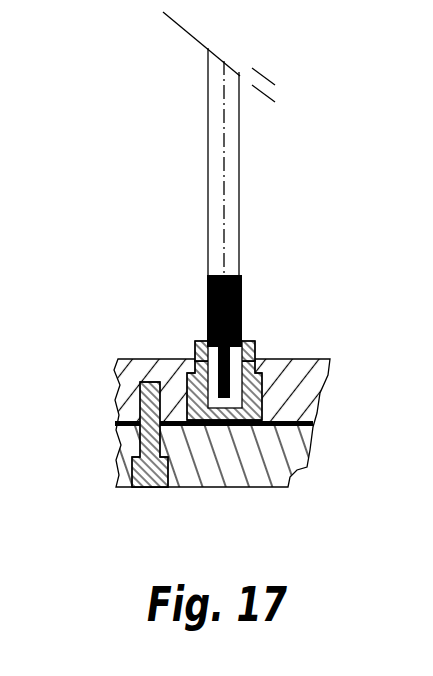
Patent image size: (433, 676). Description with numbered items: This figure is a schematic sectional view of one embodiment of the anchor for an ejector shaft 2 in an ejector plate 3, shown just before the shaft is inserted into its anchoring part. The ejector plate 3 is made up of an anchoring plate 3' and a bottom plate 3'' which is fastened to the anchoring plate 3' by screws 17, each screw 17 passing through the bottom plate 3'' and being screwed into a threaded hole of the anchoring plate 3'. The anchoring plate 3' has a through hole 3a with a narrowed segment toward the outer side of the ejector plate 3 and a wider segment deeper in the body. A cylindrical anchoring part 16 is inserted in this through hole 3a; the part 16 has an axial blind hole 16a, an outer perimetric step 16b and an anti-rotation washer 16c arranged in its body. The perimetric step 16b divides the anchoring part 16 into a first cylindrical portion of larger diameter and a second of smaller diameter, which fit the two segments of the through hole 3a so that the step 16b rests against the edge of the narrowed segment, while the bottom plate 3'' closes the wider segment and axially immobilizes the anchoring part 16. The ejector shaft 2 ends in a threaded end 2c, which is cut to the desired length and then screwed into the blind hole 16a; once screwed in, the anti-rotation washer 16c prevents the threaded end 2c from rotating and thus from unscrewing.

The ejector shaft 2 is at (217, 158).
The threaded end 2c is at (207, 286).
The ejector plate 3 is at (232, 458).
The anchoring plate 3' is at (266, 390).
The bottom plate 3'' is at (225, 492).
The through hole 3a is at (232, 390).
The cylindrical anchoring part 16 is at (256, 335).
The axial blind hole 16a is at (273, 427).
The outer perimetric step 16b is at (263, 374).
The anti-rotation washer 16c is at (197, 357).
The screw 17 is at (132, 458).